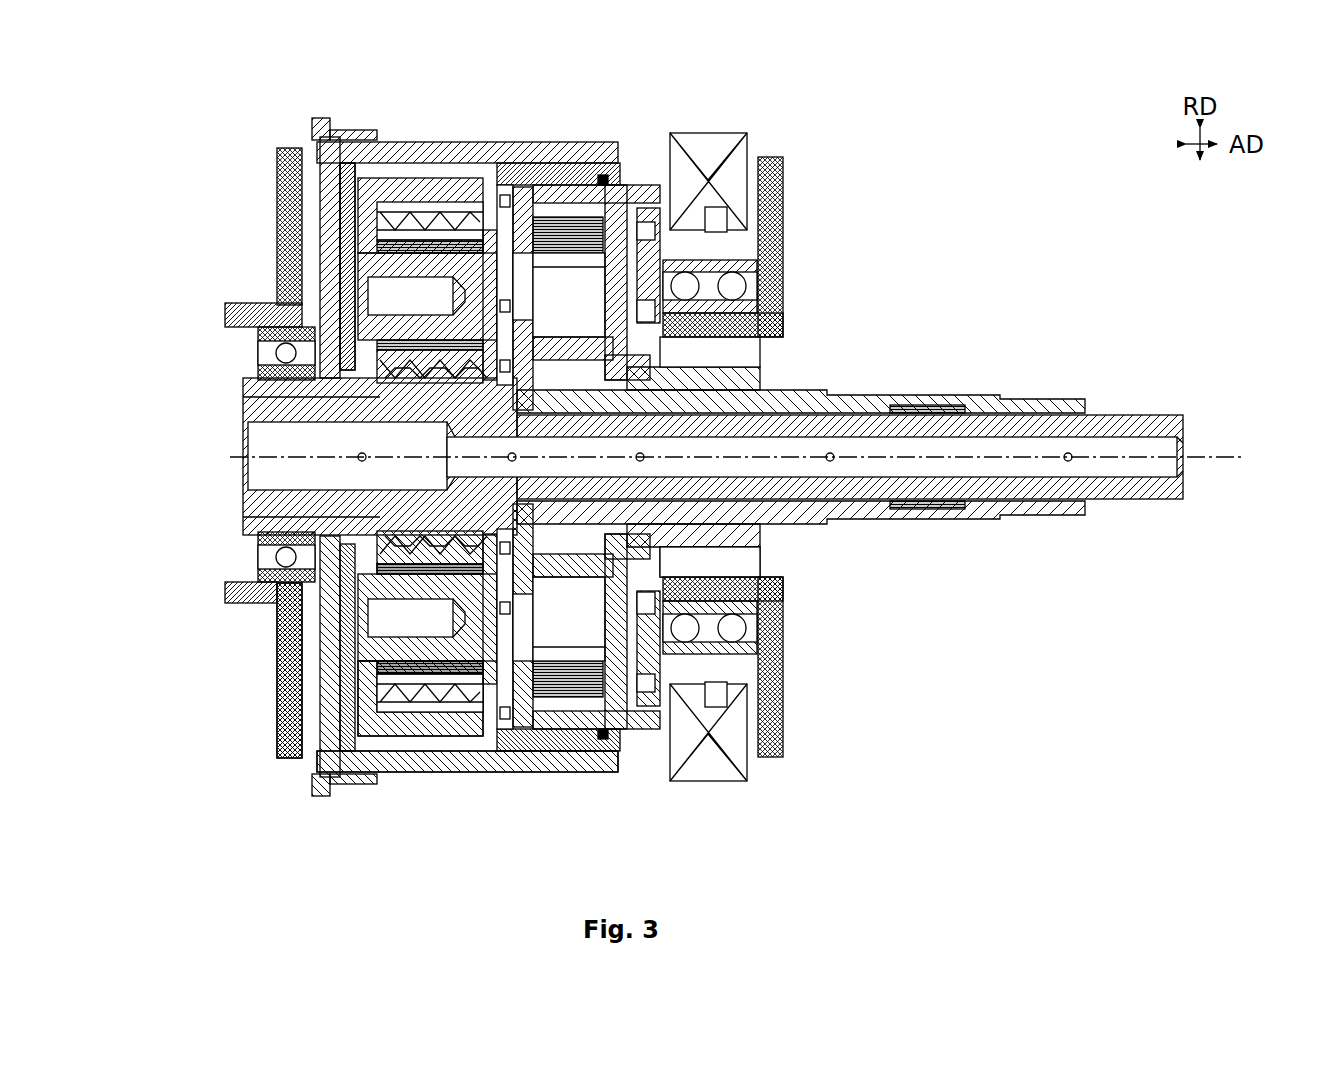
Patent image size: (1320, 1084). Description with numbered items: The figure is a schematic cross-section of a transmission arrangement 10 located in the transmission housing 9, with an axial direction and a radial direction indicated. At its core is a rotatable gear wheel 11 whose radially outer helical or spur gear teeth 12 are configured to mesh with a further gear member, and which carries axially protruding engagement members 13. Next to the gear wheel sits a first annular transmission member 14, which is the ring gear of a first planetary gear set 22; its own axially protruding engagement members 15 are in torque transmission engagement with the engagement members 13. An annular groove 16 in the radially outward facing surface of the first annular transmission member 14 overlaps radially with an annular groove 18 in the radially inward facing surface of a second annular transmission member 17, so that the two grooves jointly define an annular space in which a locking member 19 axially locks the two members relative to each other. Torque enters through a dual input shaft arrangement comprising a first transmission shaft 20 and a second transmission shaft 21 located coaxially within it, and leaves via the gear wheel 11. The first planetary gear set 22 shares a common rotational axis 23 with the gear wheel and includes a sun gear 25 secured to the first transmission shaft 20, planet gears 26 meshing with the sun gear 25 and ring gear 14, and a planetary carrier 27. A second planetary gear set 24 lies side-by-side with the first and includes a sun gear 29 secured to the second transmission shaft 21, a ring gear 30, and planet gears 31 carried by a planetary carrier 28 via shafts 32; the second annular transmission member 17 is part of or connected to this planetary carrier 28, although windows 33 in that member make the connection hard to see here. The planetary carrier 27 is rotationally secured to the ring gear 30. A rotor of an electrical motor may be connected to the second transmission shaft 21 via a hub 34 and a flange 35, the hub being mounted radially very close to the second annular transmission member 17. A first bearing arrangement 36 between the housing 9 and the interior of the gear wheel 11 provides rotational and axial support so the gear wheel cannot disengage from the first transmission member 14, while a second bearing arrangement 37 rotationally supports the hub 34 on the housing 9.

The transmission housing 9 is at (275, 273).
The transmission arrangement 10 is at (1015, 97).
The rotatable gear wheel 11 is at (790, 175).
The radially outer helical or spur gear teeth 12 is at (735, 140).
The axially protruding engagement members 13 is at (706, 244).
The first annular transmission member 14 is at (595, 172).
The axially protruding engagement members 15 is at (648, 657).
The annular groove 16 is at (615, 745).
The second annular transmission member 17 is at (535, 170).
The annular groove 18 is at (603, 745).
The locking member 19 is at (633, 180).
The first transmission shaft 20 is at (947, 517).
The second transmission shaft 21 is at (1107, 503).
The first planetary gear set 22 is at (550, 778).
The common rotational axis 23 is at (1137, 458).
The second planetary gear set 24 is at (437, 742).
The sun gear 25 is at (585, 690).
The planet gear 26 is at (700, 342).
The planetary carrier 27 is at (783, 583).
The planetary carrier 28 is at (350, 195).
The sun gear 29 is at (437, 522).
The ring gear 30 is at (455, 190).
The planet gear 31 is at (438, 250).
The shafts 32 is at (413, 667).
The windows 33 is at (300, 752).
The hub 34 is at (403, 773).
The flange 35 is at (300, 200).
The first bearing arrangement 36 is at (735, 288).
The second bearing arrangement 37 is at (257, 344).